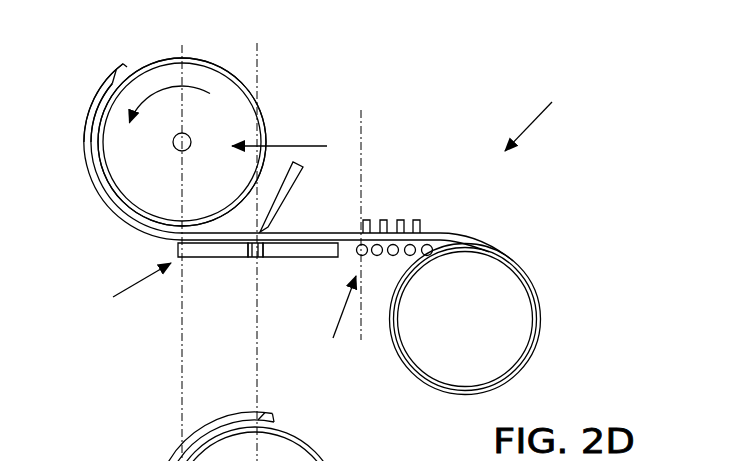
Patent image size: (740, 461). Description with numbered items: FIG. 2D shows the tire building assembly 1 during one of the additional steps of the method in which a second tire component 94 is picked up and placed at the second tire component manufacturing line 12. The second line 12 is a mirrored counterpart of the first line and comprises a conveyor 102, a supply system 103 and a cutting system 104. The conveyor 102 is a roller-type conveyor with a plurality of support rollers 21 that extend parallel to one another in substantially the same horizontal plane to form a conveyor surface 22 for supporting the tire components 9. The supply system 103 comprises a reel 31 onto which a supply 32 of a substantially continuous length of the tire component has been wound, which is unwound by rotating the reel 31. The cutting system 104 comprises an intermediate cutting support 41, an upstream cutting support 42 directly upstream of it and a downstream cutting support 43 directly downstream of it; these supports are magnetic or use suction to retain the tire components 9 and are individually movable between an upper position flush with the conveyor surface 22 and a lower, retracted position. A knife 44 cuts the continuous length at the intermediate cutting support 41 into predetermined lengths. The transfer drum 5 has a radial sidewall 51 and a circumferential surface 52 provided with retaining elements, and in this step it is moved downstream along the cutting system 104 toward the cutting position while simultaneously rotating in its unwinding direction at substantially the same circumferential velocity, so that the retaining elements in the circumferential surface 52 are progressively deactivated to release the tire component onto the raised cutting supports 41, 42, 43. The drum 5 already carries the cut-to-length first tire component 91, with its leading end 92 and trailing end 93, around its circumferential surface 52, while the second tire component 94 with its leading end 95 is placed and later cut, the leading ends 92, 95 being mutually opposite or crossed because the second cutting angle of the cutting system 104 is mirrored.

The tire building assembly 1 is at (551, 115).
The second tire component manufacturing line 12 is at (551, 115).
The transfer drum 5 is at (213, 77).
The radial sidewall 51 is at (254, 108).
The circumferential surface 52 is at (254, 91).
The tire components 9 is at (88, 128).
The first tire component 91 is at (96, 148).
The leading end 92 is at (118, 78).
The trailing end 93 is at (263, 148).
The second tire component 94 is at (90, 182).
The leading end 95 is at (121, 63).
The knife 44 is at (293, 180).
The downstream cutting support 43 is at (222, 245).
The intermediate cutting support 41 is at (260, 258).
The upstream cutting support 42 is at (318, 250).
The conveyor surface 22 is at (400, 220).
The support rollers 21 is at (388, 256).
The reel 31 is at (510, 287).
The supply 32 is at (537, 342).
The supply system 103 is at (523, 308).
The cutting system 104 is at (124, 294).
The conveyor 102 is at (345, 320).